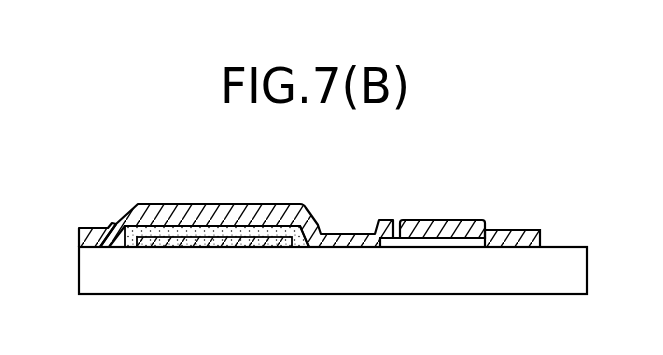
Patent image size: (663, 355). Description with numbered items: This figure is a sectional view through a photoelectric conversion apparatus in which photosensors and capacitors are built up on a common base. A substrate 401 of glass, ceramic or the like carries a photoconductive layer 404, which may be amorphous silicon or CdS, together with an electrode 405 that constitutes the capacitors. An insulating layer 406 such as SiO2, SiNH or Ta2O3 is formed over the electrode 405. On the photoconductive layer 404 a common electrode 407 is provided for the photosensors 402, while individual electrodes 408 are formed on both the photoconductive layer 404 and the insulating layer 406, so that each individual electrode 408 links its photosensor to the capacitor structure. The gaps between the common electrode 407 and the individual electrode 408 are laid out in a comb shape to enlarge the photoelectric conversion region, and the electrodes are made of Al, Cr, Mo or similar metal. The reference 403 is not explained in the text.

The substrate 401 is at (522, 283).
The photosensor 402 is at (397, 218).
The insulating layer 403 is at (217, 190).
The photoconductive layer 404 is at (423, 242).
The electrode 405 is at (170, 242).
The insulating layer 406 is at (262, 222).
The common electrode 407 is at (527, 232).
The individual electrode 408 is at (98, 228).